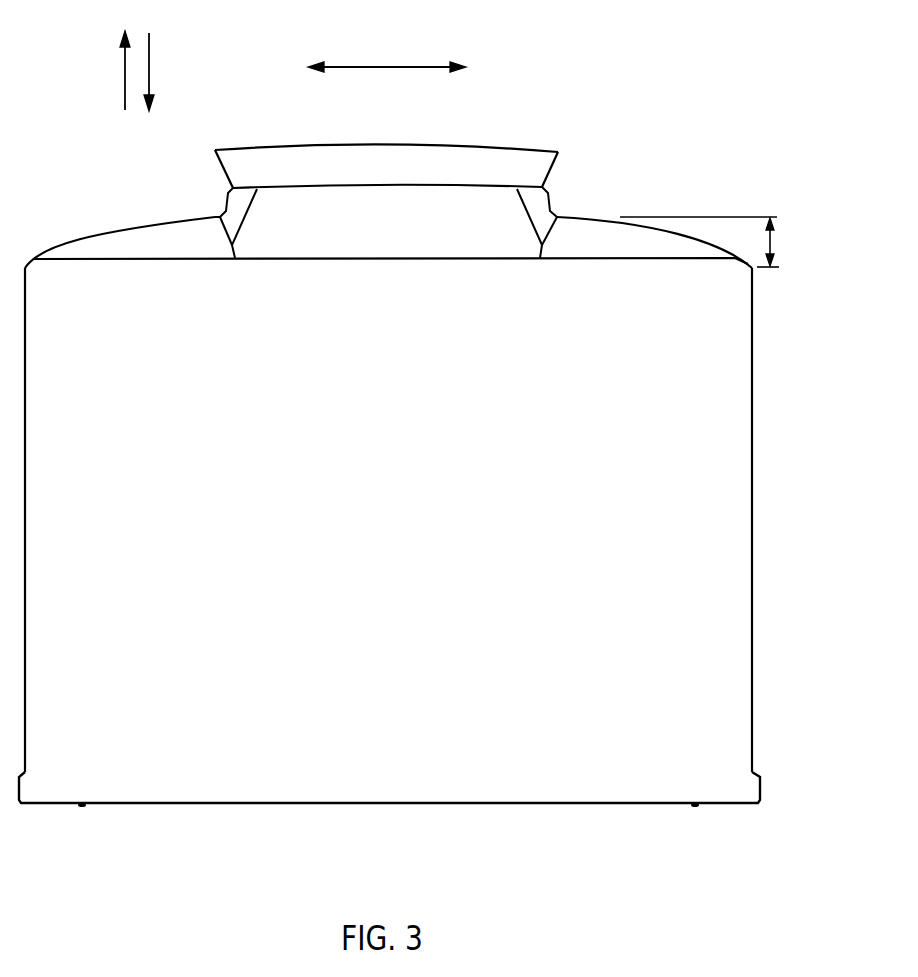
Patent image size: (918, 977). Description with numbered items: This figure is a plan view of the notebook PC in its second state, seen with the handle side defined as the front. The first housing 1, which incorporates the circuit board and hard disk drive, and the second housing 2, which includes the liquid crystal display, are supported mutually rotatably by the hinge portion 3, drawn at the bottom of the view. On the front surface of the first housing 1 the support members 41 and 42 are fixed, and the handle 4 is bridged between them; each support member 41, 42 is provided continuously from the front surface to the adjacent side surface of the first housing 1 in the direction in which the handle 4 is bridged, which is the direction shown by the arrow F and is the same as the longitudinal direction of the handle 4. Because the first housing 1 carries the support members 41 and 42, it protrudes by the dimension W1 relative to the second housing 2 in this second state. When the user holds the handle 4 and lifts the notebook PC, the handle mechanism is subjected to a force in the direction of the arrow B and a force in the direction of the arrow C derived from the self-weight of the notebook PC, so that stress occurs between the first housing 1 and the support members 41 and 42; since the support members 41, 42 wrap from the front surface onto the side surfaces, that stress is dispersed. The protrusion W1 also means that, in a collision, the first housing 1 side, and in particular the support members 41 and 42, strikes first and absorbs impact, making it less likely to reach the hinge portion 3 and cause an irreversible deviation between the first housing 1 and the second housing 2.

The first housing 1 is at (145, 240).
The second housing 2 is at (742, 527).
The hinge portion 3 is at (761, 790).
The handle 4 is at (395, 158).
The support member 41 is at (586, 228).
The support member 42 is at (70, 236).
The dimension W1 is at (772, 243).
The arrow B is at (120, 75).
The arrow C is at (152, 75).
The arrow F is at (390, 66).